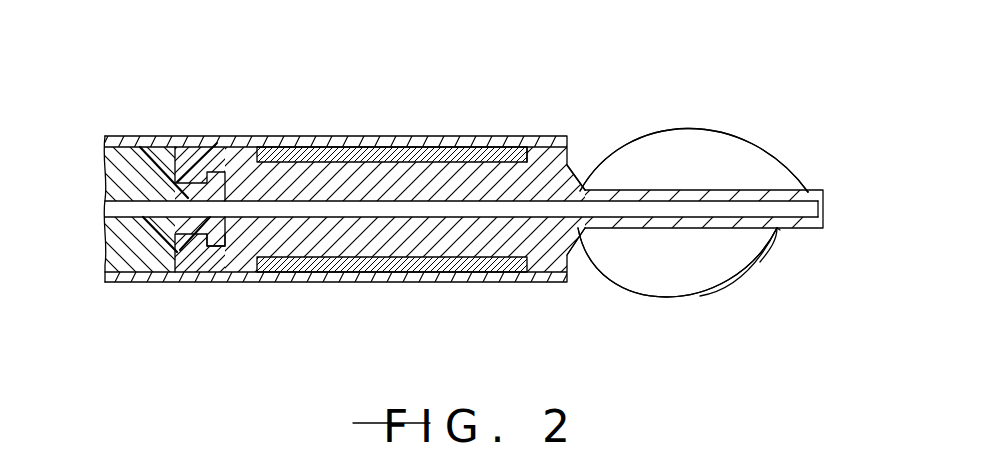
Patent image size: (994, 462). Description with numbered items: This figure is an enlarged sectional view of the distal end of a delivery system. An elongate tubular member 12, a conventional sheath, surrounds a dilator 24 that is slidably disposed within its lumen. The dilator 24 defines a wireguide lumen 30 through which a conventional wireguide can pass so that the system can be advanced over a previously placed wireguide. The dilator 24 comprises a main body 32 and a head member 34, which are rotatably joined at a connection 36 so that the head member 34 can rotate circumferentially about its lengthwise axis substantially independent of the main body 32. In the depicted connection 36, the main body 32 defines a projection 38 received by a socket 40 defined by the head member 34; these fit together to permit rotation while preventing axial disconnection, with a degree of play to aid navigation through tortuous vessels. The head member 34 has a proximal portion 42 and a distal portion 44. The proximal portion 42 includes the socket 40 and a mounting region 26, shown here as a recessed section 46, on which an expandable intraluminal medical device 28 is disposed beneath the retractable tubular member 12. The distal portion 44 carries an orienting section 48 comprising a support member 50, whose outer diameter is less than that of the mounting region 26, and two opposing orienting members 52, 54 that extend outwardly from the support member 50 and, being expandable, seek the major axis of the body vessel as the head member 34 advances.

The elongate tubular member 12 is at (152, 270).
The dilator 24 is at (152, 137).
The mounting region 26 is at (521, 128).
The expandable intraluminal medical device 28 is at (318, 268).
The wireguide lumen 30 is at (806, 200).
The main body 32 is at (125, 242).
The head member 34 is at (550, 252).
The connection 36 is at (182, 270).
The projection 38 is at (213, 178).
The socket 40 is at (216, 265).
The proximal portion 42 is at (180, 155).
The distal portion 44 is at (608, 136).
The recessed section 46 is at (527, 172).
The orienting section 48 is at (737, 285).
The support member 50 is at (780, 230).
The orienting member 52 is at (737, 143).
The orienting member 54 is at (663, 298).